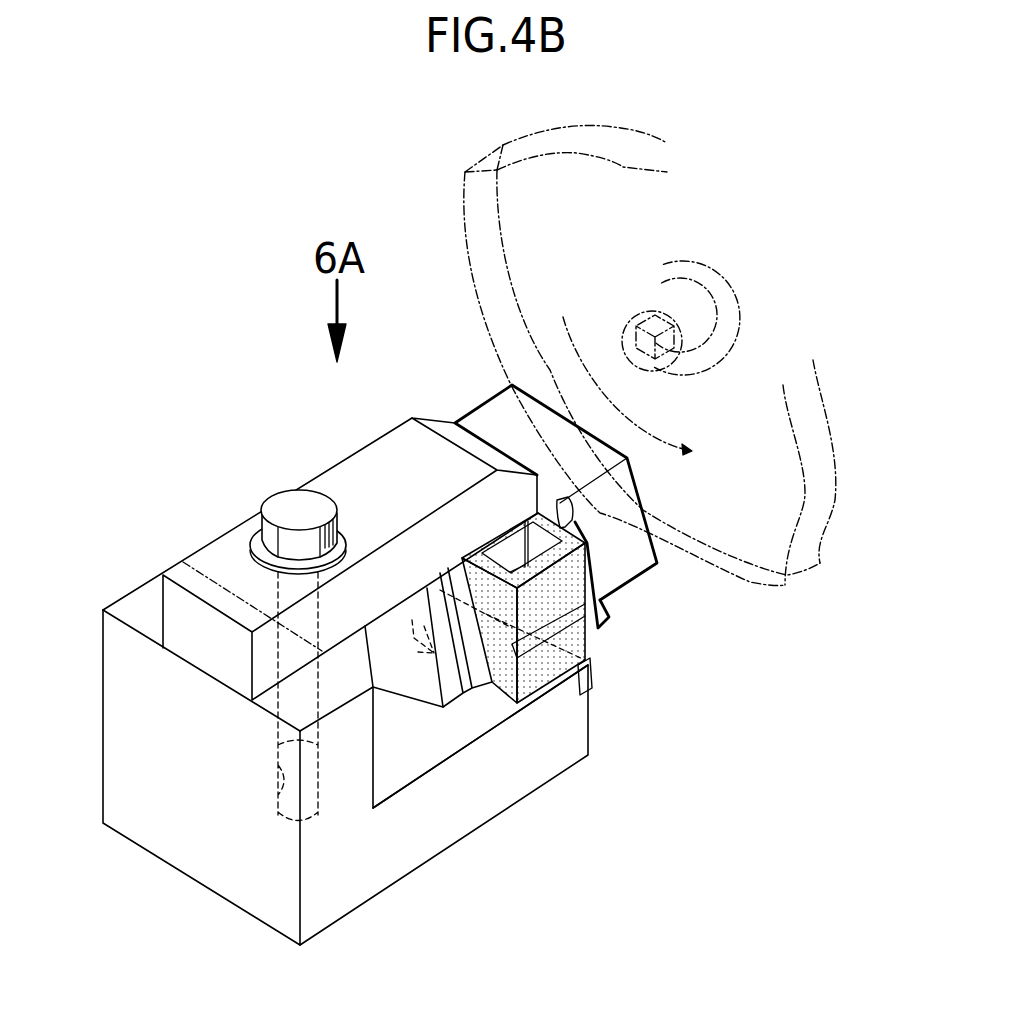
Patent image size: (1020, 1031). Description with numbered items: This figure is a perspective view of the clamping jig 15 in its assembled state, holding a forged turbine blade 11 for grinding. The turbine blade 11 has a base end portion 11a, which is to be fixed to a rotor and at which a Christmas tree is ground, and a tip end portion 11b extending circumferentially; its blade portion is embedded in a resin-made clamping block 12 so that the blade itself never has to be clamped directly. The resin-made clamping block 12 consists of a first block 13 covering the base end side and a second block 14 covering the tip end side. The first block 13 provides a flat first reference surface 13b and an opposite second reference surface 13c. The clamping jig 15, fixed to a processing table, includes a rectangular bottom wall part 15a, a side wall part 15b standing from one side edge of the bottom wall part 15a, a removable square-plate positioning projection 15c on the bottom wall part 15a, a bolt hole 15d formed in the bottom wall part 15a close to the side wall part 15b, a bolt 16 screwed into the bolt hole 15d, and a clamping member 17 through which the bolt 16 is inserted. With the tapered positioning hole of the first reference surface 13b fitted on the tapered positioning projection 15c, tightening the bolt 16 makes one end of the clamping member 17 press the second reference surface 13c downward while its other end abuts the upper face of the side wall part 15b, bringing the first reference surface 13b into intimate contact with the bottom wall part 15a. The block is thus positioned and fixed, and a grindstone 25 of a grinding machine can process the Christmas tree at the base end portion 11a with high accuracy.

The turbine blade 11 is at (620, 597).
The base end portion 11a is at (637, 562).
The tip end portion 11b is at (412, 688).
The resin-made clamping block 12 is at (637, 823).
The first block 13 is at (559, 687).
The first reference surface 13b is at (591, 688).
The second reference surface 13c is at (568, 503).
The second block 14 is at (472, 693).
The clamping jig 15 is at (274, 448).
The bottom wall part 15a is at (450, 745).
The side wall part 15b is at (122, 668).
The positioning projection 15c is at (418, 652).
The bolt hole 15d is at (276, 767).
The bolt 16 is at (287, 503).
The clamping member 17 is at (372, 446).
The grindstone 25 is at (740, 583).